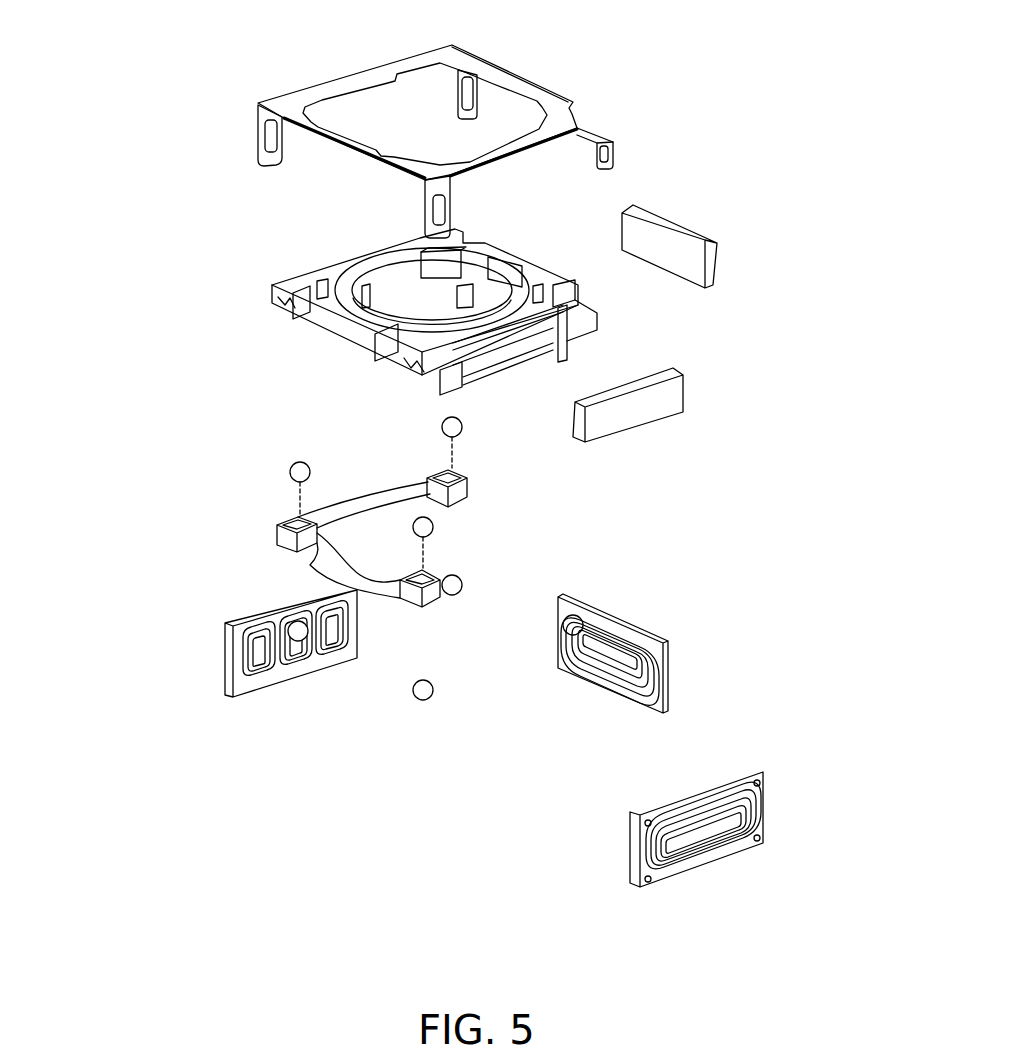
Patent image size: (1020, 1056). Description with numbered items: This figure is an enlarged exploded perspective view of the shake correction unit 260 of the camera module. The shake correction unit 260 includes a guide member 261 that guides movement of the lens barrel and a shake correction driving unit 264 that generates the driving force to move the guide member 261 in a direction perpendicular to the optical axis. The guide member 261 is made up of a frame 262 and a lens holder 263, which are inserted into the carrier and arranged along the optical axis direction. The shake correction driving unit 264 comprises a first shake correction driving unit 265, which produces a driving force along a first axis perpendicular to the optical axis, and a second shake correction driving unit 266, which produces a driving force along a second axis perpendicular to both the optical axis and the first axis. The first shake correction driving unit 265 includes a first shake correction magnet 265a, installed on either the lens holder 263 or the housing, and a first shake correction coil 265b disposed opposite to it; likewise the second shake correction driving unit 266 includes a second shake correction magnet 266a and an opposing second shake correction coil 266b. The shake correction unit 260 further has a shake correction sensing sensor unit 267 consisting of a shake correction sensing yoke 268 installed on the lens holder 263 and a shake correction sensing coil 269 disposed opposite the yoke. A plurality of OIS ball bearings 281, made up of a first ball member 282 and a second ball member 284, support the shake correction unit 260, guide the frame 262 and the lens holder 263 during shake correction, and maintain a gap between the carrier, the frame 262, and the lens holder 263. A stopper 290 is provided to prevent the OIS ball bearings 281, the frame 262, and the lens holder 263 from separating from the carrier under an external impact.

The stopper 290 is at (527, 88).
The shake correction unit 260 is at (199, 233).
The shake correction sensing yoke 268 is at (368, 290).
The lens holder 263 is at (337, 327).
The guide member 261 is at (184, 361).
The frame 262 is at (286, 521).
The shake correction sensing sensor unit 267 is at (88, 265).
The shake correction sensing coil 269 is at (231, 655).
The second ball member 284 is at (433, 526).
The first ball member 282 is at (424, 681).
The OIS ball bearings 281 is at (532, 628).
The second shake correction magnet 266a is at (712, 272).
The second shake correction coil 266b is at (647, 412).
The second shake correction driving unit 266 is at (800, 348).
The first shake correction magnet 265a is at (622, 640).
The first shake correction coil 265b is at (710, 813).
The first shake correction driving unit 265 is at (800, 550).
The shake correction driving unit 264 is at (860, 430).